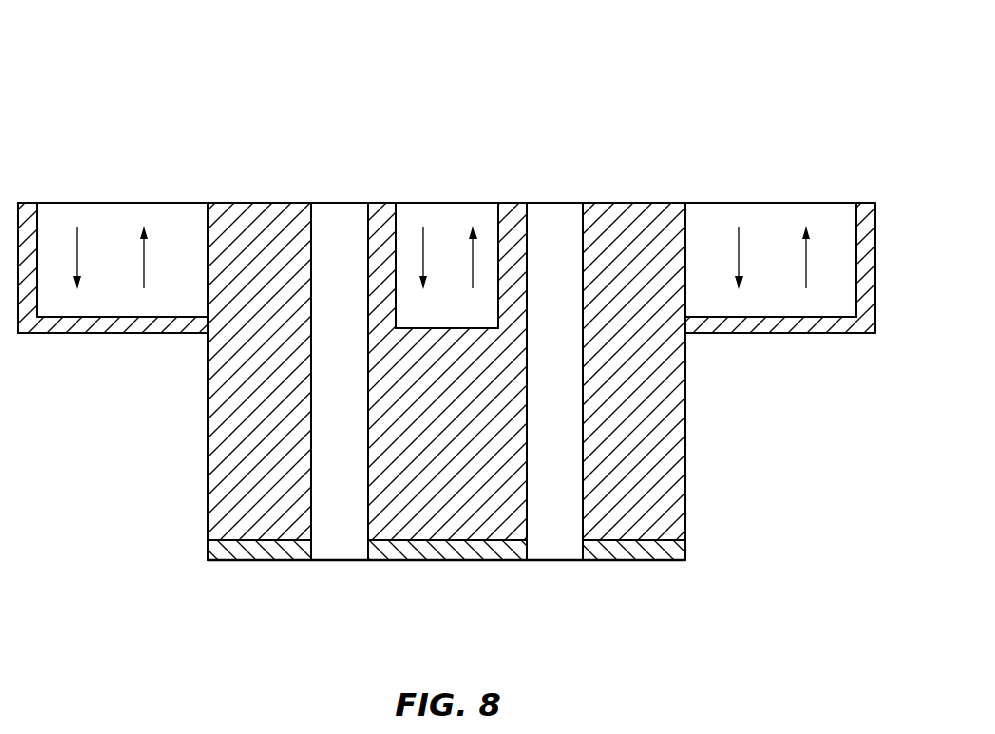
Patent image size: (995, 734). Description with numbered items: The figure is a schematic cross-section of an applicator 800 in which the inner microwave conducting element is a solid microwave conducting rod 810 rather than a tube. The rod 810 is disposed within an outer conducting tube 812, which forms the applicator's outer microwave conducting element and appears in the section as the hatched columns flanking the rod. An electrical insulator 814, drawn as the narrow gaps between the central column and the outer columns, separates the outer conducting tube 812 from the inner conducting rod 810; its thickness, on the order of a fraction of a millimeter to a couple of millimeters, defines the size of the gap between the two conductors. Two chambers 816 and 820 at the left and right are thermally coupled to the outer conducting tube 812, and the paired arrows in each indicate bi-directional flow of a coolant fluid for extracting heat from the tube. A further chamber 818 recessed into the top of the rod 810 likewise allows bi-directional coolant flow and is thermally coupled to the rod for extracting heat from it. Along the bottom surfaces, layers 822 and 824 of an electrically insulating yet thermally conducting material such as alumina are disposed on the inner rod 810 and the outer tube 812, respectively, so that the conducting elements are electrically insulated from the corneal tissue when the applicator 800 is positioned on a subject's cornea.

The applicator 800 is at (269, 88).
The microwave conducting rod 810 is at (505, 531).
The outer conducting tube 812 is at (215, 488).
The electrical insulator 814 is at (338, 548).
The chamber 816 is at (101, 217).
The chamber 818 is at (442, 214).
The chamber 820 is at (749, 215).
The layer 822 is at (245, 562).
The layer 824 is at (447, 562).